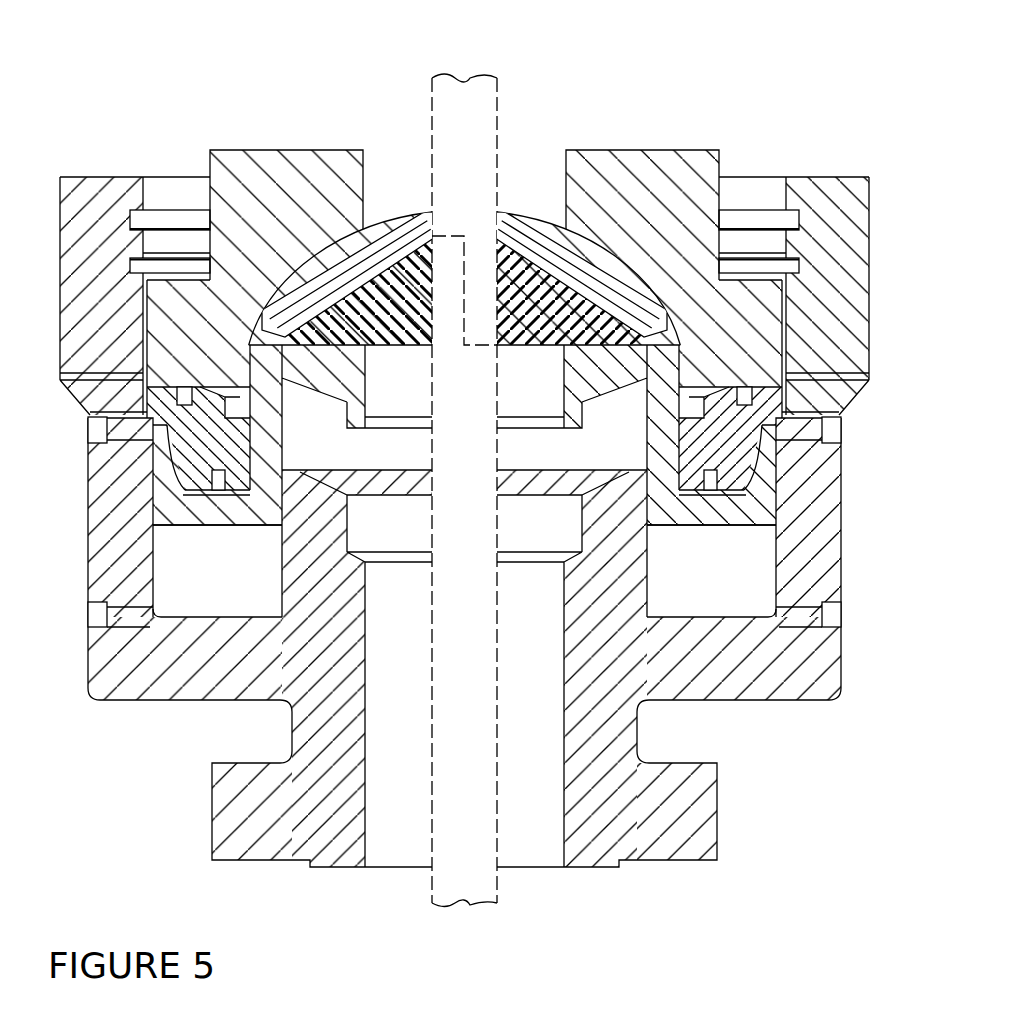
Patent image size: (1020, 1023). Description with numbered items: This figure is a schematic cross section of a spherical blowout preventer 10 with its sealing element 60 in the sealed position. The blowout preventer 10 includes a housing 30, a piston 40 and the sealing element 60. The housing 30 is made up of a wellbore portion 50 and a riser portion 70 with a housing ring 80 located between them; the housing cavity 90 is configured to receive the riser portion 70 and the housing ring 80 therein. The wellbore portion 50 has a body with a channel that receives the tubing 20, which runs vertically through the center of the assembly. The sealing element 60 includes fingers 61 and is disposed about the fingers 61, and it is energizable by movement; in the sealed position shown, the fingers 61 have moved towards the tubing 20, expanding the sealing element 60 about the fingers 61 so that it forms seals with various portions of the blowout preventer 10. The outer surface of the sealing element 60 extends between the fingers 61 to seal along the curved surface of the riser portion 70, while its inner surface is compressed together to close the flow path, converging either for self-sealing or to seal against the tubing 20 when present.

The blowout preventer 10 is at (769, 100).
The tubing 20 is at (448, 95).
The housing 30 is at (115, 195).
The piston 40 is at (763, 493).
The wellbore portion 50 is at (137, 685).
The sealing element 60 is at (396, 196).
The fingers 61 is at (548, 226).
The riser portion 70 is at (240, 165).
The housing ring 80 is at (165, 405).
The housing cavity 90 is at (727, 583).